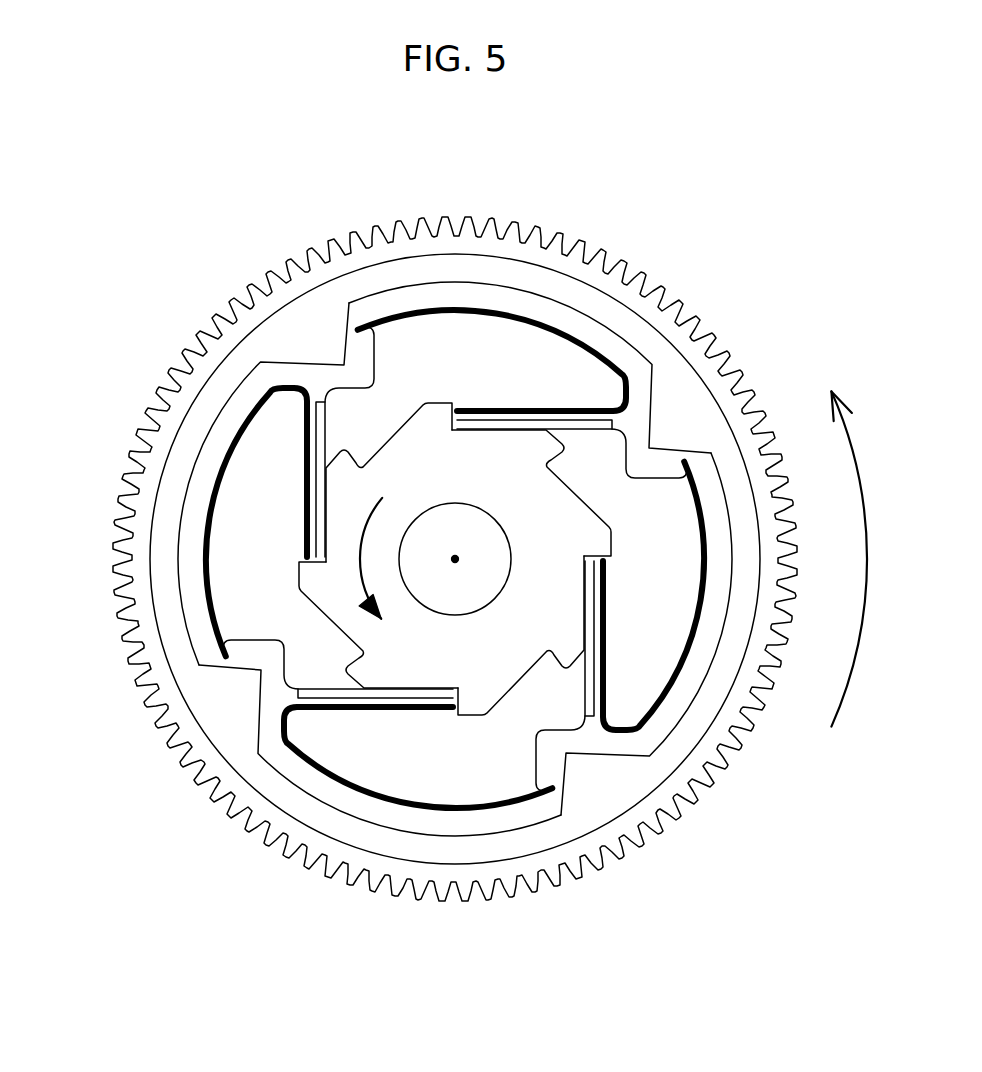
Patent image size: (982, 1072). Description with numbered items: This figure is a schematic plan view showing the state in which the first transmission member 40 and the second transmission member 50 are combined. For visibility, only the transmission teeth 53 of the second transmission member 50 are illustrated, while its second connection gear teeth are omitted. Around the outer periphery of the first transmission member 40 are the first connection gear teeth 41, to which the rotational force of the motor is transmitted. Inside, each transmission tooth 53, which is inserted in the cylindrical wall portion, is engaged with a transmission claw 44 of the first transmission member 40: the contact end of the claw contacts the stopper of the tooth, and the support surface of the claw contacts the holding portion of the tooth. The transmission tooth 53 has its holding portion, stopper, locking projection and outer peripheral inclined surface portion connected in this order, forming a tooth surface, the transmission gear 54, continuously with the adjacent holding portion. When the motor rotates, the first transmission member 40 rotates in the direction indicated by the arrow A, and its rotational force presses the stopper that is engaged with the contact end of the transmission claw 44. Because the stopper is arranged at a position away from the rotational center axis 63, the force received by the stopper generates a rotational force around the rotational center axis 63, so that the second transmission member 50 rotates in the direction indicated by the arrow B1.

The first transmission member 40 is at (109, 528).
The first connection gear teeth 41 is at (697, 802).
The transmission claw 44 is at (604, 617).
The second transmission member 50 is at (327, 622).
The transmission tooth 53 is at (612, 545).
The transmission gear 54 is at (493, 683).
The rotational center axis 63 is at (455, 559).
The arrow B1 is at (358, 560).
The arrow A is at (864, 558).